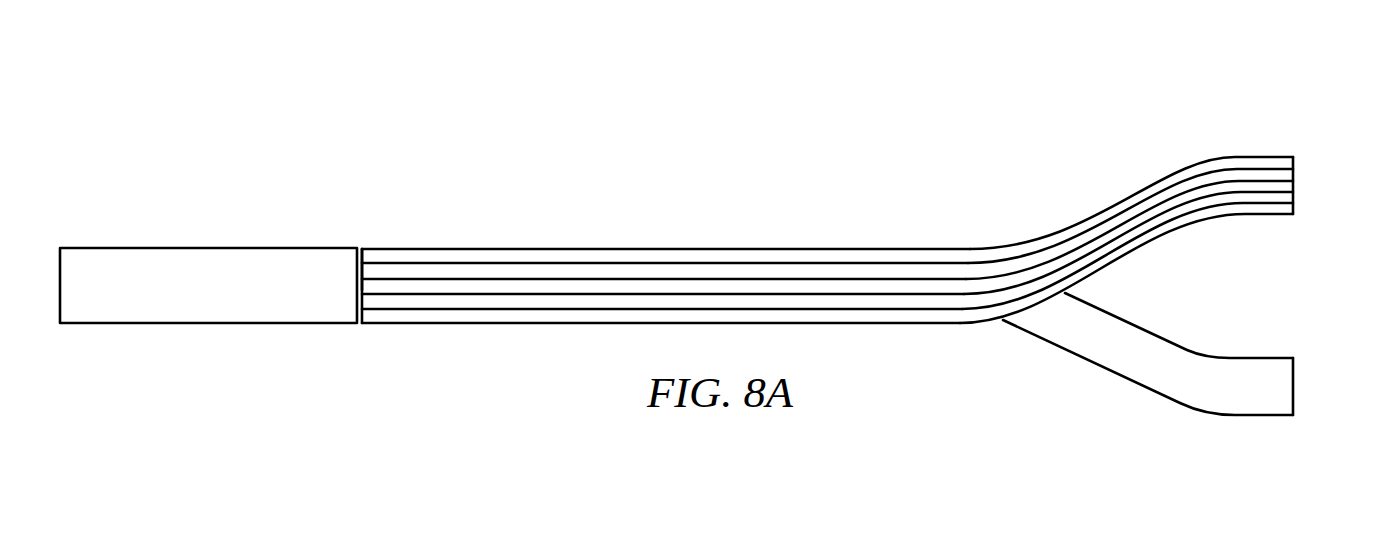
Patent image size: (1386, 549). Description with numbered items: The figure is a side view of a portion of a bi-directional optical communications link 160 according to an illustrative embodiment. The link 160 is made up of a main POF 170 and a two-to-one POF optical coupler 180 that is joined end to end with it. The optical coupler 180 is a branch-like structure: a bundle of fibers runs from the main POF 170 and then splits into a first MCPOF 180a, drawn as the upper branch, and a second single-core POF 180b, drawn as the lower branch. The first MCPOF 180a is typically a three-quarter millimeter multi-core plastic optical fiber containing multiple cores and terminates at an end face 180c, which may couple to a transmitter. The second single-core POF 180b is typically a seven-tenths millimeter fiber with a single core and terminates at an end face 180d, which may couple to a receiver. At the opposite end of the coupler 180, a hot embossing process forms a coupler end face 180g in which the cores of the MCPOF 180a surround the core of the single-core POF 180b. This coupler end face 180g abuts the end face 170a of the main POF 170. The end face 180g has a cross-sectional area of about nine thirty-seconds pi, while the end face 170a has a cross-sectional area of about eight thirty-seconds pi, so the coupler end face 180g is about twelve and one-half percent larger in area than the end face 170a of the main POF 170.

The bi-directional optical communications link 160 is at (257, 117).
The main POF 170 is at (191, 220).
The end face of the main POF 170a is at (362, 270).
The 2-to-1 POF optical coupler 180 is at (758, 217).
The first MCPOF 180a is at (1130, 193).
The second single-core POF 180b is at (1105, 368).
The end face of the first MCPOF 180c is at (1293, 185).
The end face of the second single-core POF 180d is at (1293, 385).
The coupler end face 180g is at (358, 305).